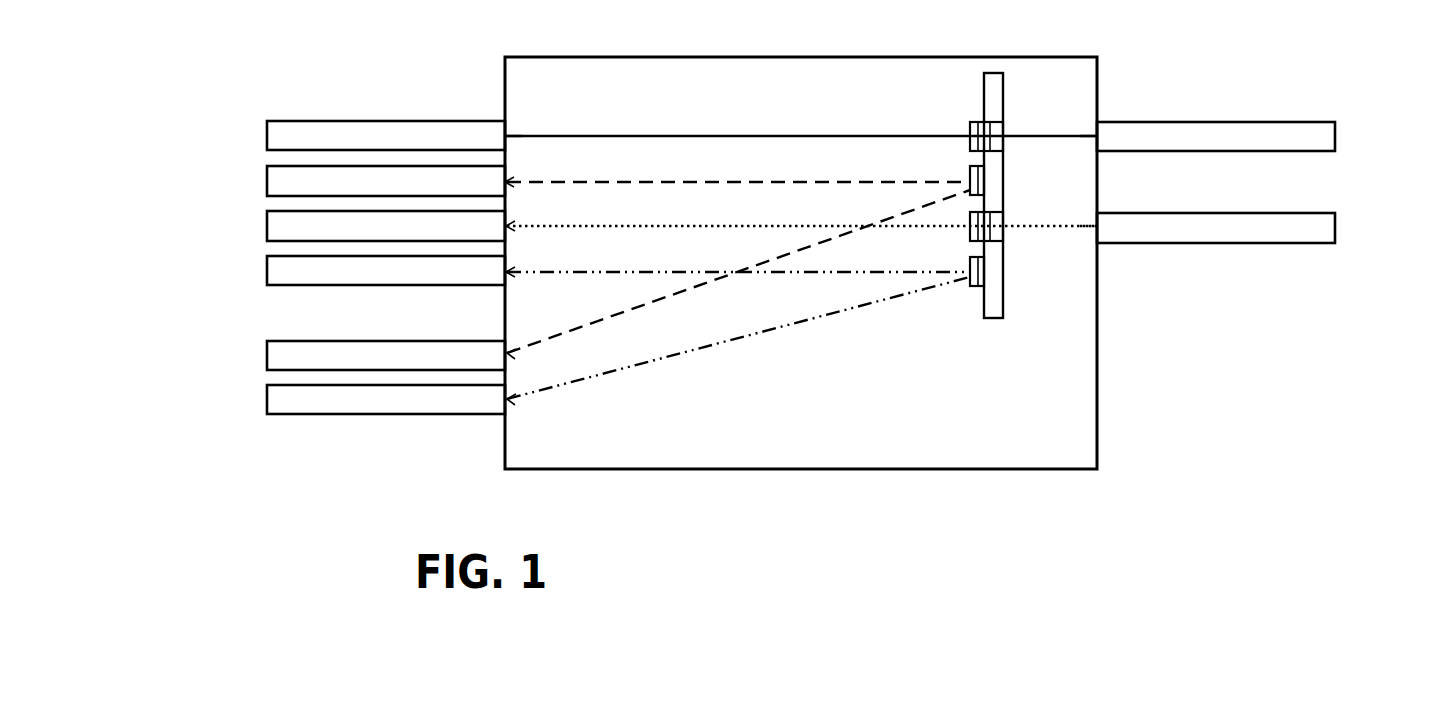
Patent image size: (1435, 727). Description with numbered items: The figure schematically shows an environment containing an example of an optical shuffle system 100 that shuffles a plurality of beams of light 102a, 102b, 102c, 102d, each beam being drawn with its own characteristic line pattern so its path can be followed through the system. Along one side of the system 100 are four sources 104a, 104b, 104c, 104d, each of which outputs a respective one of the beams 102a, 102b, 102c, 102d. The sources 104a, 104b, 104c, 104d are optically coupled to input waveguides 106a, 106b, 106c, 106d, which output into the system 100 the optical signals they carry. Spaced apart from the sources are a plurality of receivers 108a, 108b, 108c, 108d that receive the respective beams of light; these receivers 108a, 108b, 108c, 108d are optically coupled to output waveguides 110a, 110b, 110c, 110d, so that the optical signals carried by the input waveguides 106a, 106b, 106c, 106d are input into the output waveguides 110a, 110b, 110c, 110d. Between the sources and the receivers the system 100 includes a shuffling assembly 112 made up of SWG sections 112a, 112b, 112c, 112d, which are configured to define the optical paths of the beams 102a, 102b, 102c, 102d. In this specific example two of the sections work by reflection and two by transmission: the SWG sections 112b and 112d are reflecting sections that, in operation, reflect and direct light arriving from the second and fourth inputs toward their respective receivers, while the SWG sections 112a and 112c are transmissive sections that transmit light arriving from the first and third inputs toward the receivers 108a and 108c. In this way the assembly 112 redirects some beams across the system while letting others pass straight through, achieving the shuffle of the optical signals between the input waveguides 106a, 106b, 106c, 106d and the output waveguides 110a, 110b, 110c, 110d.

The optical shuffle system 100 is at (655, 57).
The beam of light 102a is at (857, 136).
The beam of light 102b is at (848, 182).
The beam of light 102c is at (730, 226).
The beam of light 102d is at (683, 272).
The source 104a is at (515, 136).
The source 104b is at (507, 181).
The source 104c is at (508, 225).
The source 104d is at (508, 273).
The input waveguide 106a is at (267, 121).
The input waveguide 106b is at (267, 187).
The input waveguide 106c is at (267, 220).
The input waveguide 106d is at (267, 283).
The receiver 108a is at (1096, 135).
The receiver 108b is at (508, 354).
The receiver 108c is at (1096, 225).
The receiver 108d is at (508, 401).
The output waveguide 110a is at (1335, 124).
The output waveguide 110b is at (267, 353).
The output waveguide 110c is at (1335, 215).
The output waveguide 110d is at (267, 413).
The shuffling assembly 112 is at (940, 245).
The transmissive SWG section 112a is at (970, 128).
The reflecting SWG section 112b is at (970, 178).
The transmissive SWG section 112c is at (970, 236).
The reflecting SWG section 112d is at (990, 328).